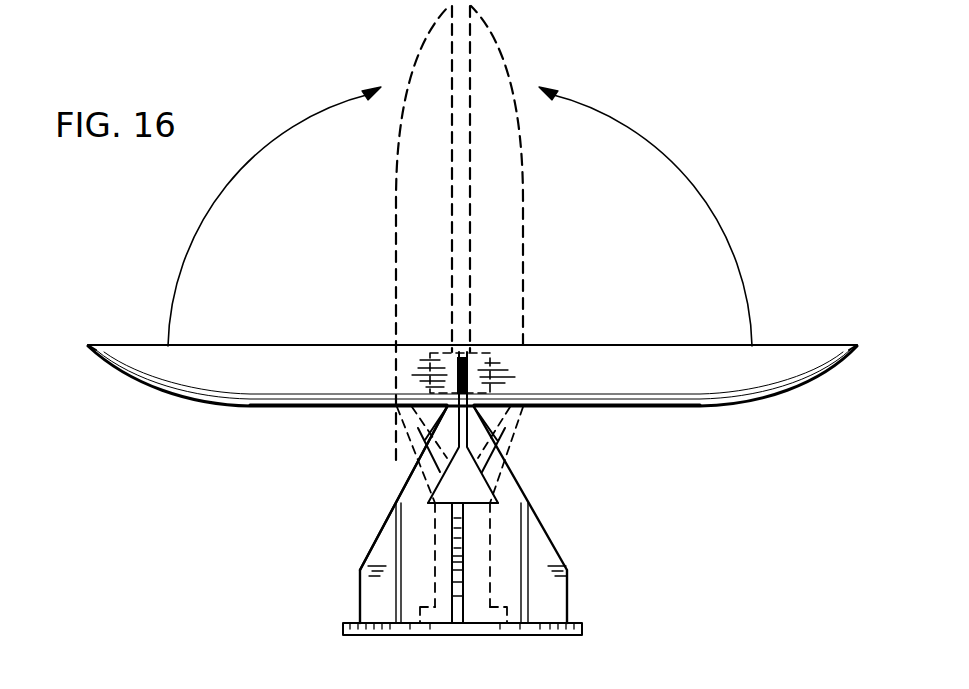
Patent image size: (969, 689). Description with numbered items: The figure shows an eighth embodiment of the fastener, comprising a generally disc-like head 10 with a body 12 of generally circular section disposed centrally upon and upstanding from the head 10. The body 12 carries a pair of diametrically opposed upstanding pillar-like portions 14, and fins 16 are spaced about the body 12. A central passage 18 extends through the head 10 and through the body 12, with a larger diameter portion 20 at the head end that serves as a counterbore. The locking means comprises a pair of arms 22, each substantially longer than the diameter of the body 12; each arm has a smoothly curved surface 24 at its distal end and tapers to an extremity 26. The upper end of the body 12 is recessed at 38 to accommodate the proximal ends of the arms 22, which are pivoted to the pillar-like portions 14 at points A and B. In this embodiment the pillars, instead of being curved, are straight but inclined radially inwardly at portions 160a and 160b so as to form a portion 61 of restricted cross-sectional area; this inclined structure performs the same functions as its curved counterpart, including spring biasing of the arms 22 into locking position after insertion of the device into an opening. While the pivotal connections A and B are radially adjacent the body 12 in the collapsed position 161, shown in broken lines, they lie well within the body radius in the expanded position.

The head 10 is at (343, 628).
The body 12 is at (542, 545).
The pillar-like portions 14 is at (420, 484).
The fins 16 is at (372, 600).
The central passage 18 is at (433, 553).
The larger diameter portion 20 is at (435, 626).
The arms 22 is at (298, 345).
The smoothly curved surface 24 is at (140, 396).
The extremity 26 is at (88, 345).
The recess 38 is at (502, 478).
The portion of restricted cross-sectional area 61 is at (463, 552).
The inclined portion 160a is at (500, 430).
The inclined portion 160b is at (432, 428).
The collapsed position 161 is at (500, 56).
The pivot A is at (485, 406).
The pivot B is at (440, 404).